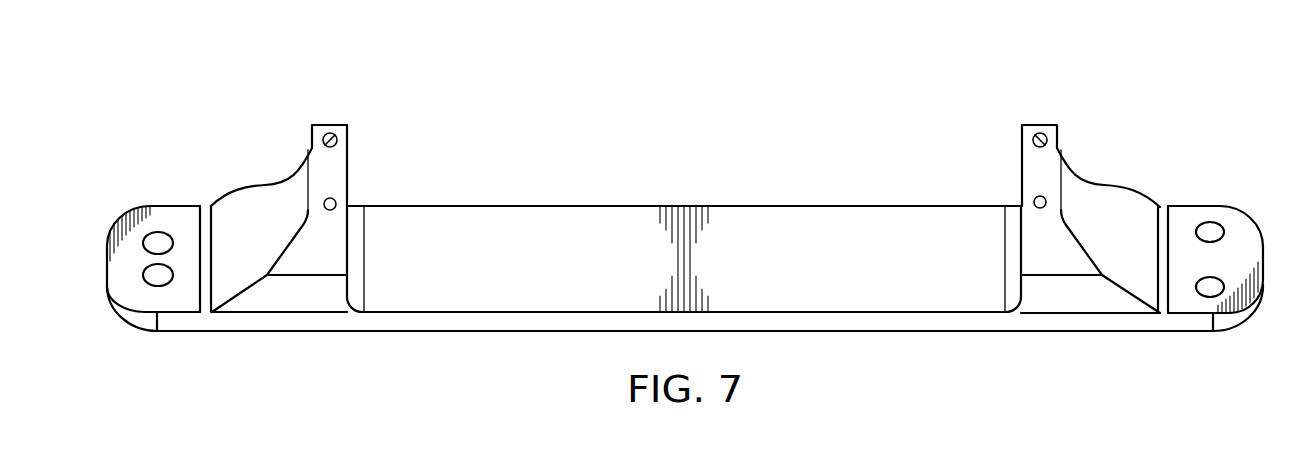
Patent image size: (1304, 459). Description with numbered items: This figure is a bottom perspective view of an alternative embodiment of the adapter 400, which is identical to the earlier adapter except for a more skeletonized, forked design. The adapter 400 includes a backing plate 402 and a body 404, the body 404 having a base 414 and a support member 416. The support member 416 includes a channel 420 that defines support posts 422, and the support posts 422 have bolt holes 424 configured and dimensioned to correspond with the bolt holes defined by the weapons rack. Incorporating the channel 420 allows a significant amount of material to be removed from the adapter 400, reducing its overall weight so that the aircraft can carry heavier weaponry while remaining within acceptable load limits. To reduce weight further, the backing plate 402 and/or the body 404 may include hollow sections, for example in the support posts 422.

The adapter 400 is at (1212, 99).
The backing plate 402 is at (1237, 208).
The body 404 is at (257, 312).
The base 414 is at (306, 306).
The support member 416 is at (348, 134).
The channel 420 is at (719, 139).
The support posts 422 is at (348, 170).
The bolt holes 424 is at (331, 133).